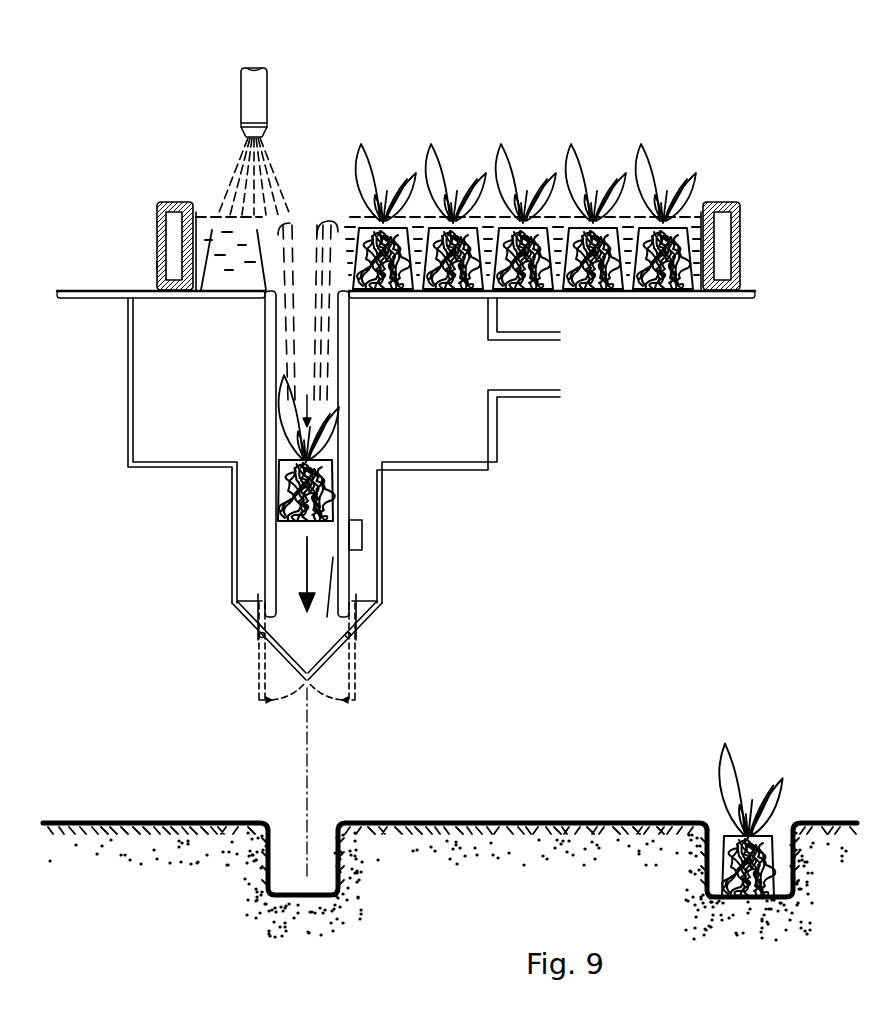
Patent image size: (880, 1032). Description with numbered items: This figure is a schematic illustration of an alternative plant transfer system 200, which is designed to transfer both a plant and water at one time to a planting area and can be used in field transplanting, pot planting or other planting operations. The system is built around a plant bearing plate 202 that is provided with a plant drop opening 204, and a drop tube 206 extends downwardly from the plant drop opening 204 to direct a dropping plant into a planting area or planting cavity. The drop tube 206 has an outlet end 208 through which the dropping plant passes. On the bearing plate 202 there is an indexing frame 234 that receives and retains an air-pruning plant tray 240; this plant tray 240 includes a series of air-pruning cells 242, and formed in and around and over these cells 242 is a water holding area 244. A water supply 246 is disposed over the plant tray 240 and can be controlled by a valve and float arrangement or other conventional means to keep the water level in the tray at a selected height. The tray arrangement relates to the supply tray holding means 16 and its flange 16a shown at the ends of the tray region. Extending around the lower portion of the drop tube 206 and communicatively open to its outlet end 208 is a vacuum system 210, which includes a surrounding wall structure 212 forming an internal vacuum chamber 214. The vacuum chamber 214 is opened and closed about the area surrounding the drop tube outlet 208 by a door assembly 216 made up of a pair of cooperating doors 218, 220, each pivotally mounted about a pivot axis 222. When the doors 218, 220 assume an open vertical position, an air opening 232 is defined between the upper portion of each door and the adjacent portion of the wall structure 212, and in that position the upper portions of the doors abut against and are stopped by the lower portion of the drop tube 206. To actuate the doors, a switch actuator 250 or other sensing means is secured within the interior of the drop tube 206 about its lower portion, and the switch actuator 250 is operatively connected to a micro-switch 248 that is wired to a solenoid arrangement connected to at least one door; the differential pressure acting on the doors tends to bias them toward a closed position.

The plant transfer system 200 is at (182, 86).
The water supply 246 is at (266, 67).
The water holding area 244 is at (298, 240).
The tray side flange 16a is at (187, 202).
The supply tray holding means 16 is at (723, 255).
The indexing frame 234 is at (156, 262).
The air-pruning plant tray 240 is at (490, 94).
The air-pruning cells 242 is at (697, 215).
The plant bearing plate 202 is at (230, 299).
The plant drop opening 204 is at (307, 323).
The drop tube 206 is at (348, 380).
The outlet end 208 is at (327, 617).
The switch actuator 250 is at (340, 553).
The micro-switch 248 is at (362, 537).
The vacuum system 210 is at (560, 450).
The vacuum chamber 214 is at (470, 382).
The surrounding wall structure 212 is at (497, 457).
The door assembly 216 is at (305, 619).
The pivot axis 222 is at (259, 636).
The air opening 232 is at (247, 592).
The door 220 is at (293, 680).
The door 218 is at (333, 672).